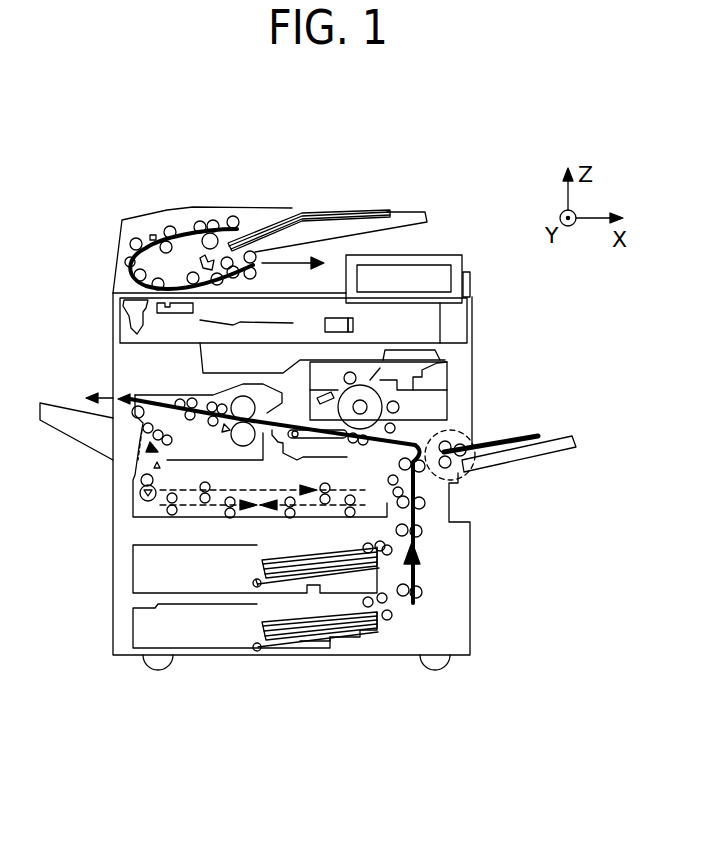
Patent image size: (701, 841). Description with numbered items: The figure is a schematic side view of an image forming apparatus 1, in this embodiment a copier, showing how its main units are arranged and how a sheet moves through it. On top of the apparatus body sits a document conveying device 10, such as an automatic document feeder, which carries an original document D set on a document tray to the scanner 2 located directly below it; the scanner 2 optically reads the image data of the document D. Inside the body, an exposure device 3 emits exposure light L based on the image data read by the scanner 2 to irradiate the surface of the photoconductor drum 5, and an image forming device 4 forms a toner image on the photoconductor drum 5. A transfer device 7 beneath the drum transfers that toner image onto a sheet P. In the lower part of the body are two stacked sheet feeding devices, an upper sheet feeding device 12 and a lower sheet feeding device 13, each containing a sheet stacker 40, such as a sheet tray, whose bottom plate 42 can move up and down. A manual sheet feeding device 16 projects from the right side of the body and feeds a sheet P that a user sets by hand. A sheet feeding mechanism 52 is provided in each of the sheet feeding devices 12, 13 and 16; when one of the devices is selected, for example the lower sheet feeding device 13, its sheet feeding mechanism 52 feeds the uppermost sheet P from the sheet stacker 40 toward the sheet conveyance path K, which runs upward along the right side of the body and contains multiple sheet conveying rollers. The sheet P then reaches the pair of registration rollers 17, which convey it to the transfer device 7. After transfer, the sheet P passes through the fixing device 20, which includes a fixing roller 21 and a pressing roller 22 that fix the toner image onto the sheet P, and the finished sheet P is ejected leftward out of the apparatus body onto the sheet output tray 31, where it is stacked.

The image forming apparatus 1 is at (446, 208).
The scanner 2 is at (120, 331).
The exposure device 3 is at (410, 353).
The image forming device 4 is at (458, 368).
The photoconductor drum 5 is at (357, 397).
The transfer device 7 is at (390, 491).
The document conveying device 10 is at (217, 208).
The sheet feeding device 12 is at (130, 576).
The sheet feeding device 13 is at (206, 650).
The manual sheet feeding device 16 is at (519, 469).
The pair of registration rollers 17 is at (400, 420).
The fixing device 20 is at (240, 466).
The fixing roller 21 is at (217, 388).
The pressing roller 22 is at (235, 436).
The sheet output tray 31 is at (82, 432).
The sheet stacker 40 is at (133, 562).
The bottom plate 42 is at (330, 640).
The sheet feeding mechanism 52 is at (472, 447).
The original document D is at (380, 210).
The sheet conveyance path K is at (427, 516).
The exposure light L is at (410, 352).
The sheet P is at (530, 437).